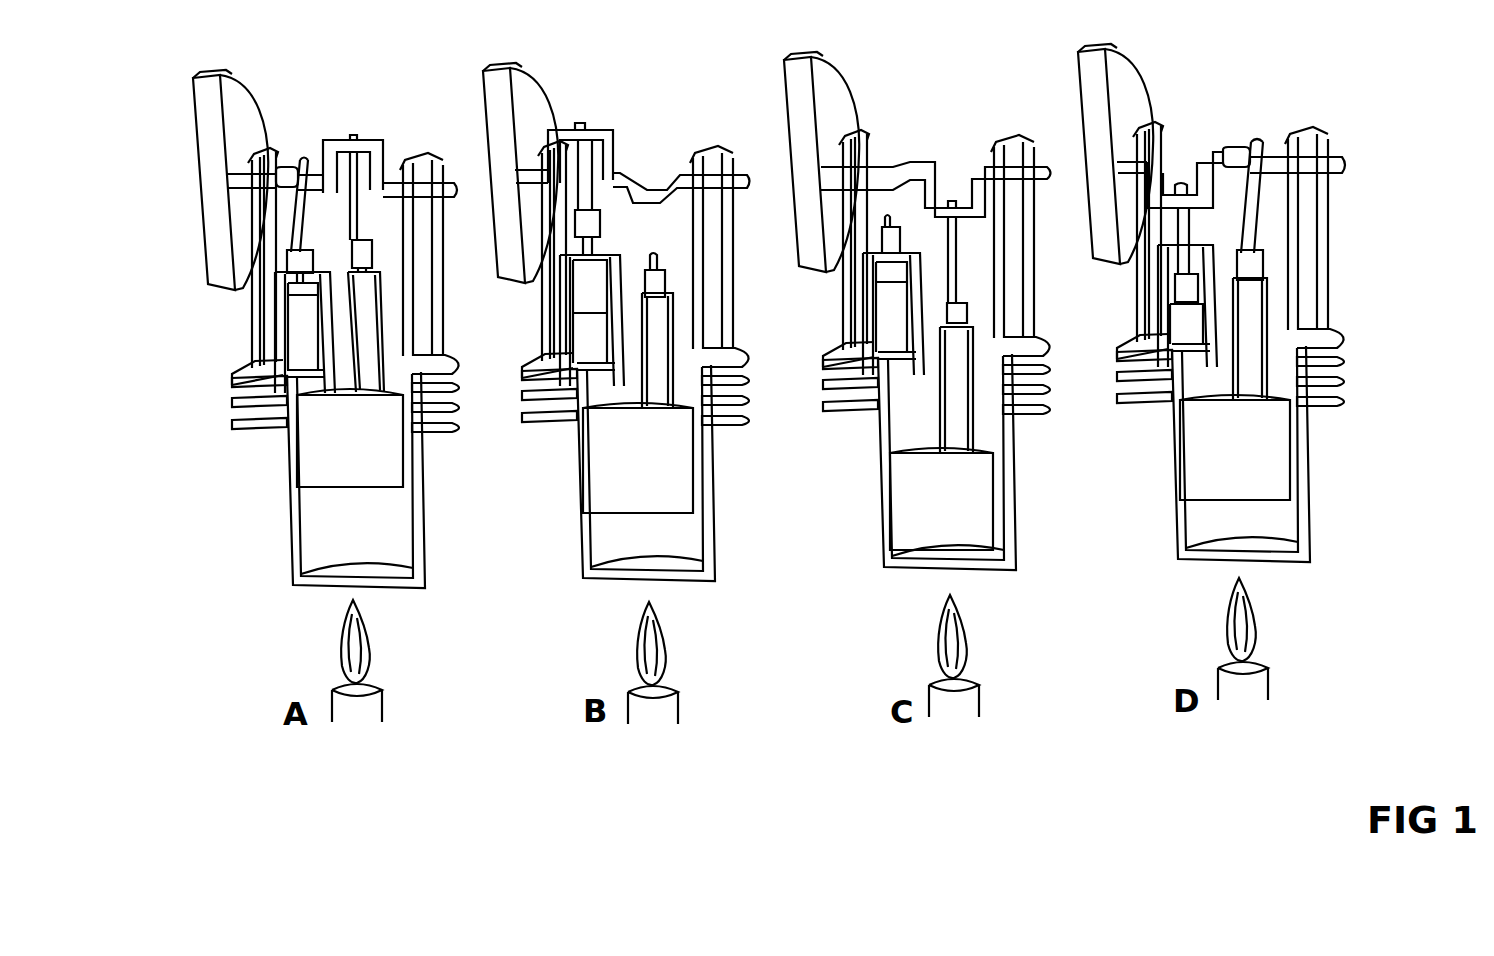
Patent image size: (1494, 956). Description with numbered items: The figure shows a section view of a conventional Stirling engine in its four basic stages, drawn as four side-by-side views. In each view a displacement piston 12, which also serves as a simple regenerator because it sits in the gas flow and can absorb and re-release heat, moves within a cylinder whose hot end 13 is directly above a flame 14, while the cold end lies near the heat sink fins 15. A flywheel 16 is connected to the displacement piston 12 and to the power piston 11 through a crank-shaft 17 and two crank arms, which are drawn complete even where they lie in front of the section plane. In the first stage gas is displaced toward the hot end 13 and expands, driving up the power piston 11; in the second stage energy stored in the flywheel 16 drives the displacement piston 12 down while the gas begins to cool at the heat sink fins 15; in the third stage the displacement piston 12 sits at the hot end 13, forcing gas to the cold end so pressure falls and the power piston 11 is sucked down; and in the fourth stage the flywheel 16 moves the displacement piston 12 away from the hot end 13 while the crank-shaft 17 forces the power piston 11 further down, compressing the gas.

The power piston 11 is at (291, 330).
The displacement piston 12 is at (327, 447).
The hot end 13 is at (293, 540).
The flame 14 is at (333, 648).
The heat sink fins 15 is at (232, 395).
The flywheel 16 is at (205, 192).
The crank-shaft 17 is at (438, 186).